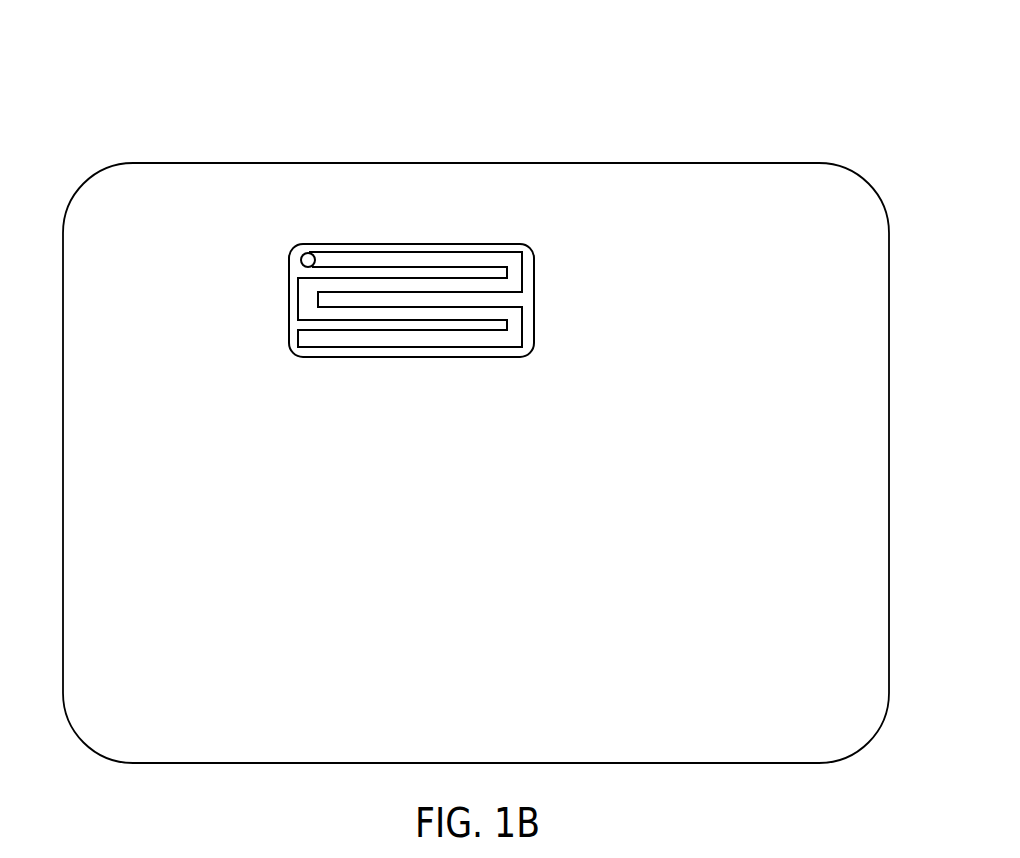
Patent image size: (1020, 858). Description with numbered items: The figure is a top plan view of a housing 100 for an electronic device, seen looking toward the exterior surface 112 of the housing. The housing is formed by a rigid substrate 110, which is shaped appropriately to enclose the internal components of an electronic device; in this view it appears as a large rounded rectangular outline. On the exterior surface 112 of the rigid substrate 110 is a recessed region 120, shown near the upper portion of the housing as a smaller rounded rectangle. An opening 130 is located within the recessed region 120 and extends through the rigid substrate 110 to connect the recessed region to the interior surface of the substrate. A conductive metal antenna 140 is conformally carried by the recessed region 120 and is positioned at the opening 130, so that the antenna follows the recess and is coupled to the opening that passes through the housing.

The housing 100 is at (165, 33).
The rigid substrate 110 is at (118, 165).
The exterior surface 112 is at (802, 178).
The recessed region 120 is at (530, 250).
The opening 130 is at (308, 256).
The conductive metal antenna 140 is at (407, 258).